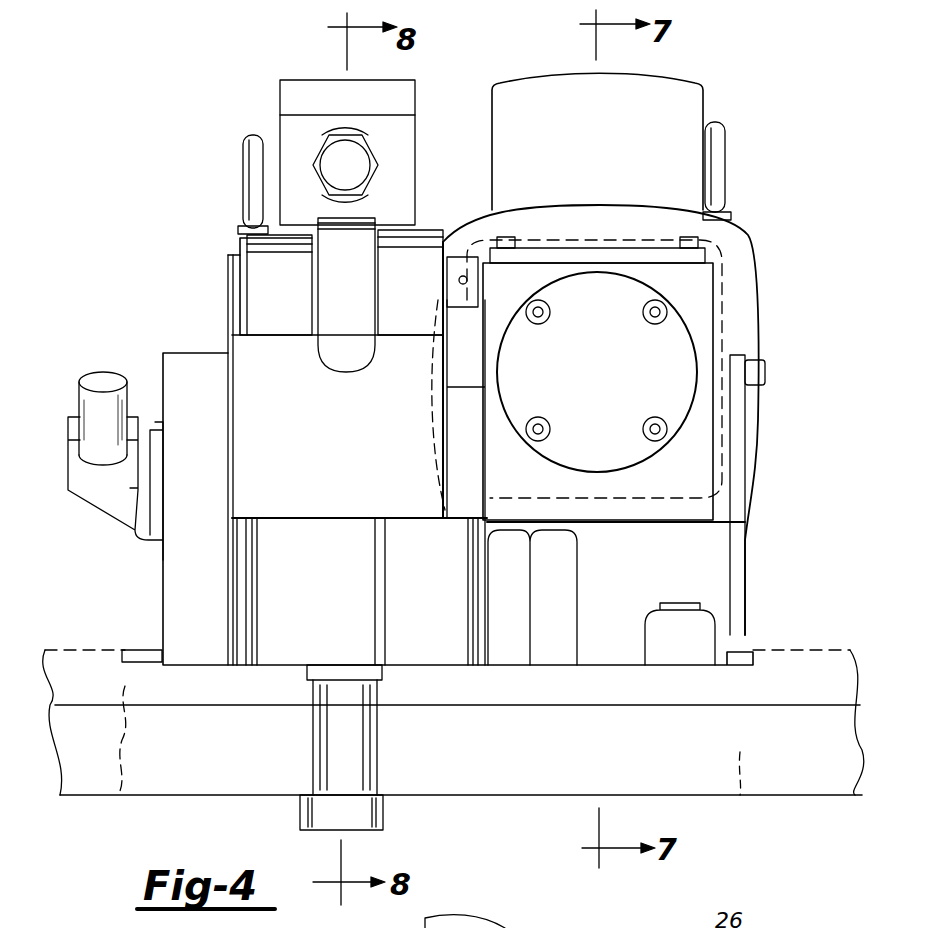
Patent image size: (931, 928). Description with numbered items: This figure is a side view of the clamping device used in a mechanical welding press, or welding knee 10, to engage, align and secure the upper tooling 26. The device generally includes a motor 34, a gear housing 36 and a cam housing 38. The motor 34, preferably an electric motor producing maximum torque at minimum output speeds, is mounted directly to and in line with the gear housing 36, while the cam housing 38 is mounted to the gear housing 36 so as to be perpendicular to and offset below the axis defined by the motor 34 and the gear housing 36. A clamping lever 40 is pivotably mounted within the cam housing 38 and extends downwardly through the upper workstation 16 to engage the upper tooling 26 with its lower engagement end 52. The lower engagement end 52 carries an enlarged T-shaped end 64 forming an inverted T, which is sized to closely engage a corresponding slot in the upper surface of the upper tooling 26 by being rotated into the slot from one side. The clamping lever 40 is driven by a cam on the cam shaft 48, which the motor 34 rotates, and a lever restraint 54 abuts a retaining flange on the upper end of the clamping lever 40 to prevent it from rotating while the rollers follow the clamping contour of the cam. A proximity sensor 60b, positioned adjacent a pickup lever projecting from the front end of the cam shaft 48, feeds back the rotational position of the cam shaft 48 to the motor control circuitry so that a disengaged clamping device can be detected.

The welding knee 10 is at (140, 168).
The upper workstation 16 is at (116, 795).
The upper tooling 26 is at (740, 795).
The motor 34 is at (734, 251).
The gear housing 36 is at (700, 437).
The cam housing 38 is at (196, 596).
The clamping lever 40 is at (330, 288).
The cam shaft 48 is at (153, 557).
The lower engagement end 52 is at (357, 752).
The lever restraint 54 is at (291, 101).
The proximity sensor 60b is at (100, 373).
The T-shaped end 64 is at (300, 815).